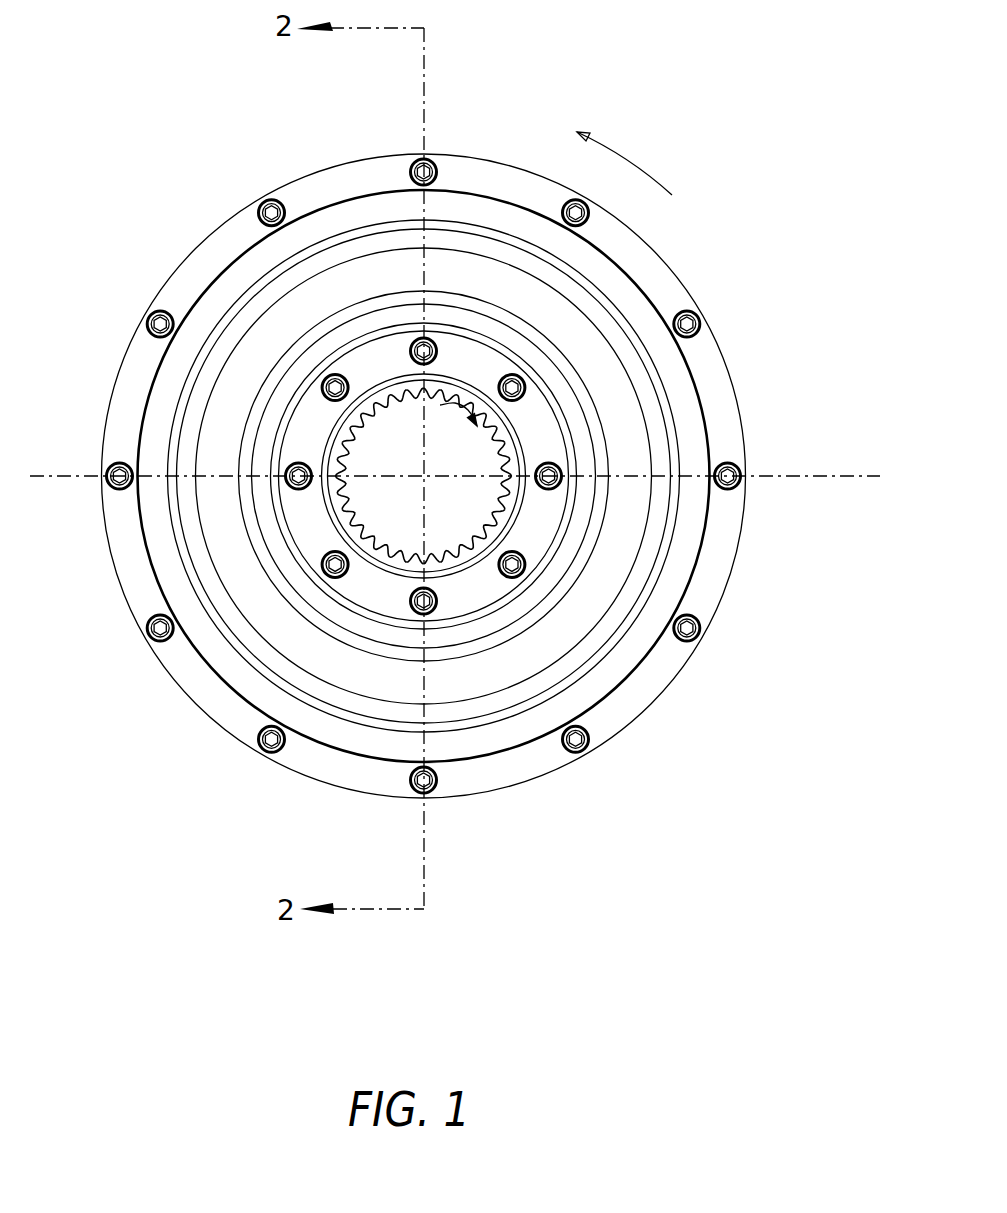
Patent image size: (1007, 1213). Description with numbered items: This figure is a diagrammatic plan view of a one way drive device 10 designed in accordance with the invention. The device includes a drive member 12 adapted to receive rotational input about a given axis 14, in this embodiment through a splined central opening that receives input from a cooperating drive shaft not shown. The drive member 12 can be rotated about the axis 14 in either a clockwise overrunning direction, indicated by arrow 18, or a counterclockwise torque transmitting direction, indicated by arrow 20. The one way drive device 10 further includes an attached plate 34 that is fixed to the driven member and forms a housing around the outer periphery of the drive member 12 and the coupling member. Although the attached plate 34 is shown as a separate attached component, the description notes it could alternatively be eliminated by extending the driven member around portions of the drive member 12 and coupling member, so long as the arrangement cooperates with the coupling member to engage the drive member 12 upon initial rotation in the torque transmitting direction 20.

The one way drive device 10 is at (468, 142).
The drive member 12 is at (353, 520).
The axis 14 is at (420, 477).
The arrow 18 is at (452, 408).
The arrow 20 is at (623, 158).
The attached plate 34 is at (338, 218).